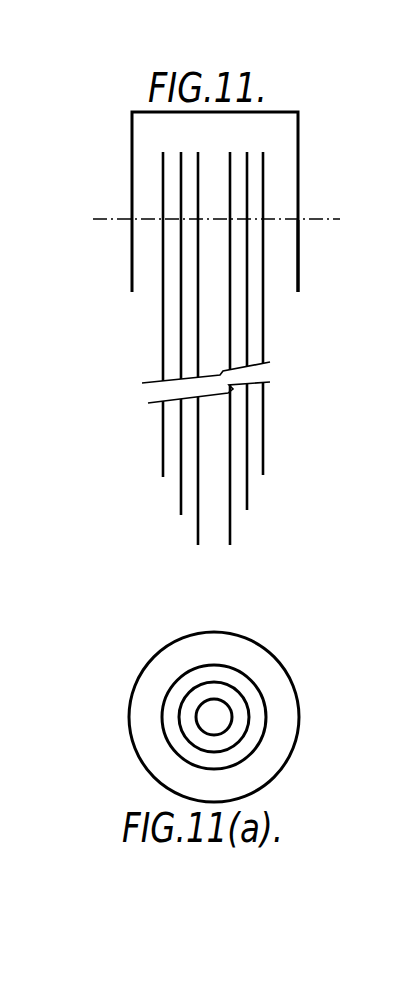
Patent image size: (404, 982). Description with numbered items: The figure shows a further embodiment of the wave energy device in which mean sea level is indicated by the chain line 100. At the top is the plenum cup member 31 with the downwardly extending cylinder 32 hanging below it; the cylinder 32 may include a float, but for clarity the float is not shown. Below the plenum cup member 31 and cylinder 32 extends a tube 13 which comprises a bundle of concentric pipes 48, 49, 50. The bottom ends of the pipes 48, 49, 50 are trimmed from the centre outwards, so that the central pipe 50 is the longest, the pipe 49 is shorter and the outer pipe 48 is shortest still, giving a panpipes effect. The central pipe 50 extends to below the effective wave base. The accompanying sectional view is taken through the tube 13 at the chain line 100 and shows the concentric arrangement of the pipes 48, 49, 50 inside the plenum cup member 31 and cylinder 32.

In FIG. 11, the chain line 100 is at (102, 200).
In FIG. 11, the plenum cup member 31 is at (280, 147).
In FIG. 11A, the plenum cup member 31 is at (288, 681).
In FIG. 11, the downwardly extending cylinder 32 is at (299, 252).
In FIG. 11, the tube 13 is at (235, 349).
In FIG. 11A, the tube 13 is at (255, 672).
In FIG. 11, the concentric pipe 48 is at (255, 448).
In FIG. 11A, the concentric pipe 48 is at (255, 718).
In FIG. 11, the concentric pipe 49 is at (240, 488).
In FIG. 11A, the concentric pipe 49 is at (237, 725).
In FIG. 11, the central pipe 50 is at (220, 528).
In FIG. 11A, the central pipe 50 is at (215, 723).